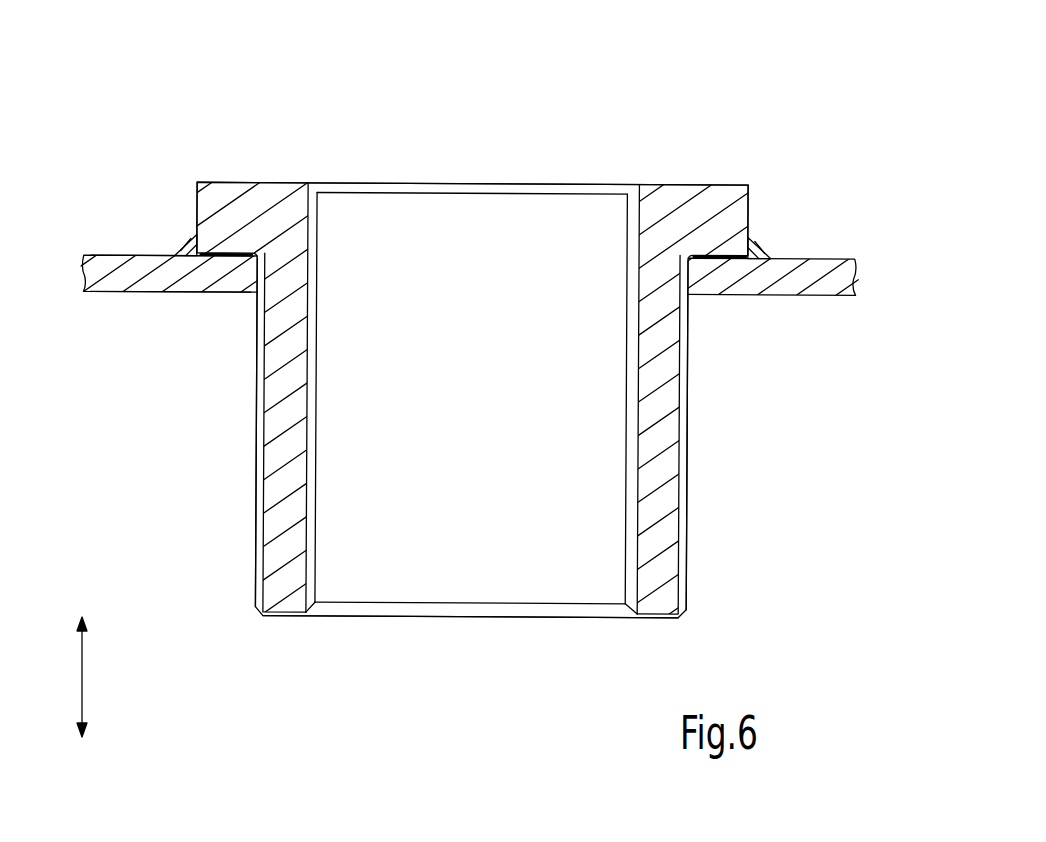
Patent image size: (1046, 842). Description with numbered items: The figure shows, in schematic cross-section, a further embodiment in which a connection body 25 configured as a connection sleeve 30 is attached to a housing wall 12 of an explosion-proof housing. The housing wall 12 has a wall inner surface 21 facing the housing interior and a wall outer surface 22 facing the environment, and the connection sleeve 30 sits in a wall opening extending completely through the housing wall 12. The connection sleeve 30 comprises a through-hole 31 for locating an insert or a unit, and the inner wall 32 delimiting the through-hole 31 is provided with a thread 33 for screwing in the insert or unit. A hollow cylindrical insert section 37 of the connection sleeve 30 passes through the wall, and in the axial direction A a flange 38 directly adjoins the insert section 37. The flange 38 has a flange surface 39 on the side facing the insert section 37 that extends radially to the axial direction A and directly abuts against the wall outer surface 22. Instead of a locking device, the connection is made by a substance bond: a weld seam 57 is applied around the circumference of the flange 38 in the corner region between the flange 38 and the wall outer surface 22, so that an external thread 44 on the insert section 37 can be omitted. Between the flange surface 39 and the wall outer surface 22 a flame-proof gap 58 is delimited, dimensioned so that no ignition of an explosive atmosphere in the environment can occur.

The housing wall 12 is at (500, 293).
The wall inner surface 21 is at (112, 298).
The wall outer surface 22 is at (113, 252).
The connection body 25 is at (523, 421).
The connection sleeve 30 is at (523, 421).
The through-hole 31 is at (557, 580).
The inner wall 32 is at (427, 439).
The thread 33 is at (308, 568).
The insert section 37 is at (226, 445).
The flange 38 is at (723, 195).
The flange surface 39 is at (223, 262).
The external thread 44 is at (685, 482).
The weld seam 57 is at (753, 250).
The flame-proof gap 58 is at (777, 253).
The axial direction A is at (82, 681).